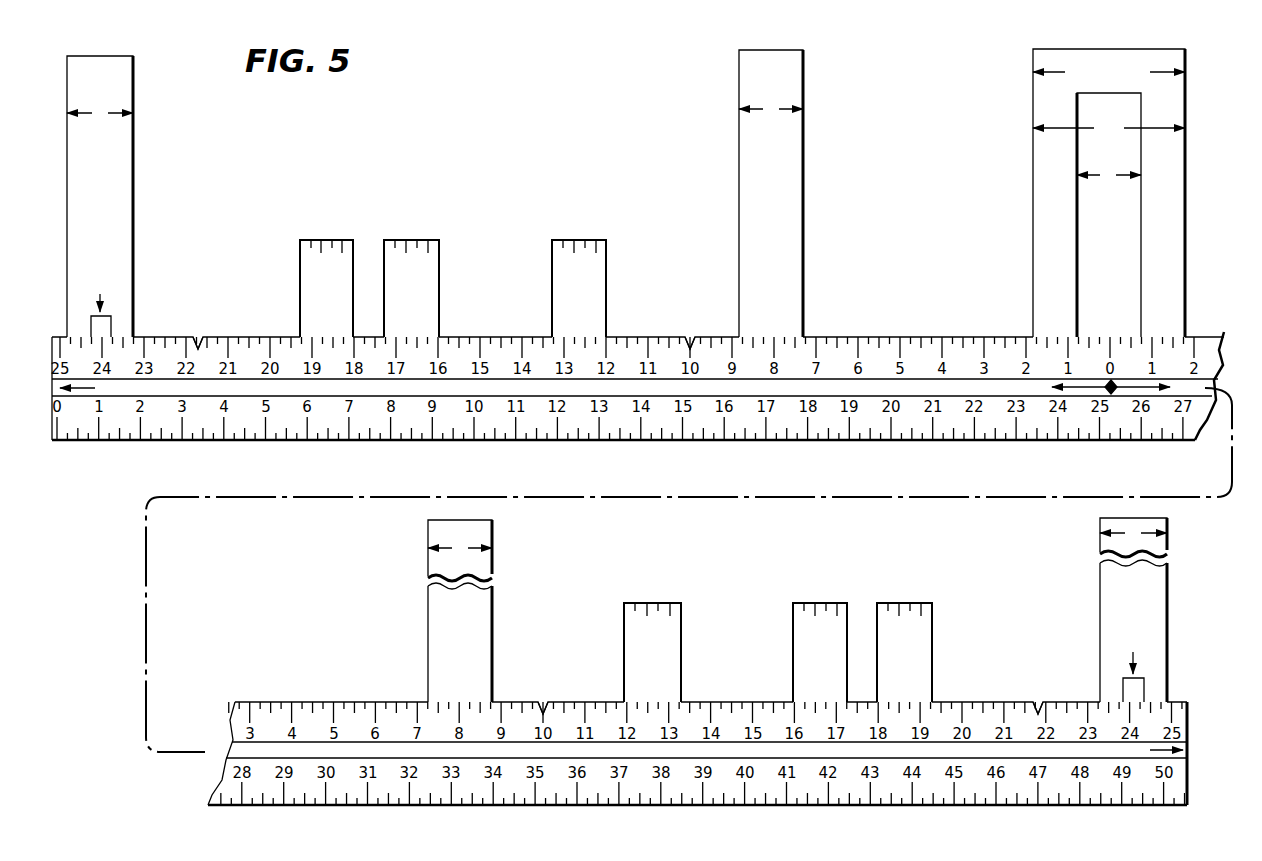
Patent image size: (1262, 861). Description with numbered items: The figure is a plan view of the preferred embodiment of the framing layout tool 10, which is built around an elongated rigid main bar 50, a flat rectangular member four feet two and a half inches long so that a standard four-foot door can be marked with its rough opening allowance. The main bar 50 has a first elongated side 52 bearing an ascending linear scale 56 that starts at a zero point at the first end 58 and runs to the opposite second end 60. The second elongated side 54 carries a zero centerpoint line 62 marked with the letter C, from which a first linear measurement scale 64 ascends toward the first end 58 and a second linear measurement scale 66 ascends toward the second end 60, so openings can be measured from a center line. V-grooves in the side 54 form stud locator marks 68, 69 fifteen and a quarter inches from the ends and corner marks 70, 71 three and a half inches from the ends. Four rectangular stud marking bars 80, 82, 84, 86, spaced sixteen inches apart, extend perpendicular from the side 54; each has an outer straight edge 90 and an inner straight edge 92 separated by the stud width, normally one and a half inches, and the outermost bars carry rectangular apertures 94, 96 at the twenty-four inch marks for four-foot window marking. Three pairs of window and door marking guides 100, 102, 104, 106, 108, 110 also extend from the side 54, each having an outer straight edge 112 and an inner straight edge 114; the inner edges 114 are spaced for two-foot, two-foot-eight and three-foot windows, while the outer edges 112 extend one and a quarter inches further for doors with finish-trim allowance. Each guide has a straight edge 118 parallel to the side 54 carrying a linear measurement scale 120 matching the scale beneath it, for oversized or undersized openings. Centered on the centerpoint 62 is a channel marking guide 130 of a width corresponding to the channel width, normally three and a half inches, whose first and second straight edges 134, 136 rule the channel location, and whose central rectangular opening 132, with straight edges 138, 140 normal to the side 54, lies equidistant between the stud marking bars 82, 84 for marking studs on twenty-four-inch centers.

The layout tool 10 is at (530, 156).
The main bar 50 is at (908, 385).
The first elongated side 52 is at (183, 440).
The second elongated side 54 is at (850, 337).
The ascending linear scale 56 is at (128, 419).
The first end 58 is at (52, 440).
The second end 60 is at (1187, 718).
The zero centerpoint line 62 is at (1112, 337).
The first linear measurement scale 64 is at (656, 337).
The second linear measurement scale 66 is at (703, 700).
The stud locator mark 68 is at (543, 700).
The stud locator mark 69 is at (689, 337).
The corner mark 70 is at (1038, 700).
The corner mark 71 is at (198, 337).
The stud marking bar 80 is at (133, 52).
The stud marking bar 82 is at (741, 50).
The stud marking bar 84 is at (430, 519).
The stud marking bar 86 is at (1167, 518).
The first elongated outer straight edge 90 is at (62, 147).
The second elongated inner straight edge 92 is at (133, 174).
The rectangular aperture 94 is at (113, 323).
The rectangular aperture 96 is at (1146, 690).
The window and door marking guide 100 is at (600, 236).
The window and door marking guide 102 is at (634, 600).
The window and door marking guide 104 is at (418, 236).
The window and door marking guide 106 is at (818, 600).
The window and door marking guide 108 is at (300, 238).
The window and door marking guide 110 is at (933, 600).
The outer straight edge 112 is at (384, 258).
The inner straight edge 114 is at (384, 262).
The straight edge 118 is at (318, 240).
The linear measurement scale 120 is at (300, 252).
The channel marking guide 130 is at (1030, 66).
The central rectangular opening 132 is at (1095, 107).
The first straight edge 134 is at (1033, 178).
The second straight edge 136 is at (1186, 225).
The straight edge 138 is at (1078, 242).
The straight edge 140 is at (1141, 272).